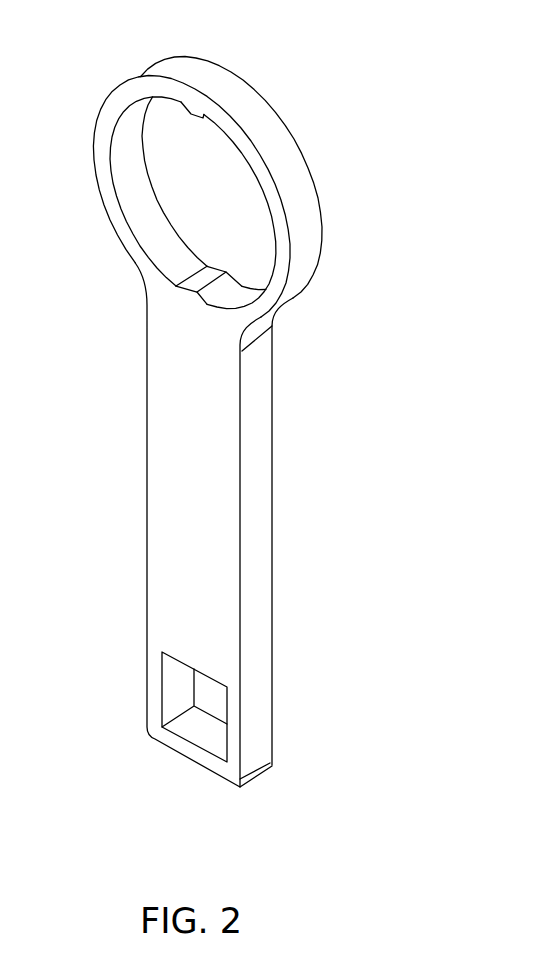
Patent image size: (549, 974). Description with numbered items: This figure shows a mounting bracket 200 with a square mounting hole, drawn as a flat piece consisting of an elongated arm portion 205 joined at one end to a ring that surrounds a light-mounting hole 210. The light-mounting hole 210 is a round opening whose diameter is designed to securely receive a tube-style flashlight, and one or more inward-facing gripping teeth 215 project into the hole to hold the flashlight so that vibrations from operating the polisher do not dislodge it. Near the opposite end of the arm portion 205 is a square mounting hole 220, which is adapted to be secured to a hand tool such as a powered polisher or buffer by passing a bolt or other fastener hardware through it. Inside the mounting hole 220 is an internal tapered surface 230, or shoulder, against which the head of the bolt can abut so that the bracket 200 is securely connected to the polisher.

The bracket 200 is at (345, 70).
The arm portion 205 is at (210, 533).
The light-mounting hole 210 is at (245, 190).
The inward-facing gripping teeth 215 is at (191, 111).
The mounting hole 220 is at (216, 700).
The internal tapered surface 230 is at (178, 676).